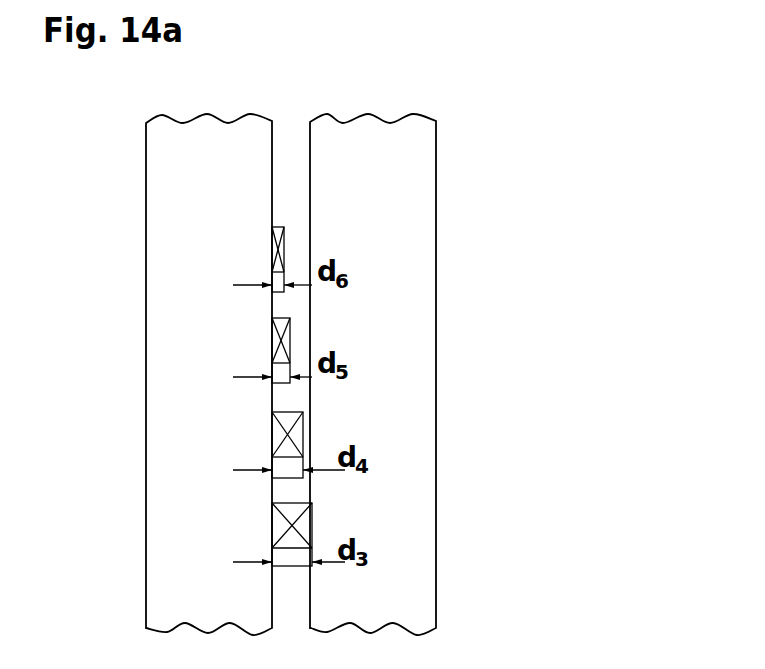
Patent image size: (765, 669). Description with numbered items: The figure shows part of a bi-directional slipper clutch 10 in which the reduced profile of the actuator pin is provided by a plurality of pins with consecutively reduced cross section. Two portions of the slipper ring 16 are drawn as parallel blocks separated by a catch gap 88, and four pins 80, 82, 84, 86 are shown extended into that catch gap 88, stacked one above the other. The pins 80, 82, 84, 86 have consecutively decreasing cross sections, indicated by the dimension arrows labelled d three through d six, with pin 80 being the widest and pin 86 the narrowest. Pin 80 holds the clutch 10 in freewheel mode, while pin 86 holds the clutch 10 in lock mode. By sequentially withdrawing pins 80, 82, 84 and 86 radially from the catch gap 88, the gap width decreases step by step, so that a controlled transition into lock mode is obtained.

The bi-directional slipper clutch 10 is at (590, 157).
The slipper ring 16 is at (218, 191).
The pin 80 is at (290, 528).
The pin 82 is at (289, 437).
The pin 84 is at (277, 345).
The pin 86 is at (277, 253).
The catch gap 88 is at (306, 133).